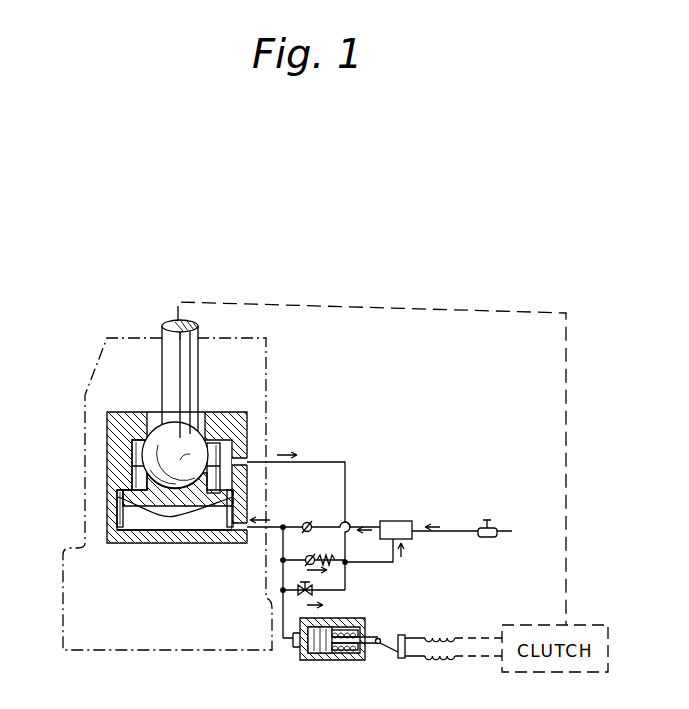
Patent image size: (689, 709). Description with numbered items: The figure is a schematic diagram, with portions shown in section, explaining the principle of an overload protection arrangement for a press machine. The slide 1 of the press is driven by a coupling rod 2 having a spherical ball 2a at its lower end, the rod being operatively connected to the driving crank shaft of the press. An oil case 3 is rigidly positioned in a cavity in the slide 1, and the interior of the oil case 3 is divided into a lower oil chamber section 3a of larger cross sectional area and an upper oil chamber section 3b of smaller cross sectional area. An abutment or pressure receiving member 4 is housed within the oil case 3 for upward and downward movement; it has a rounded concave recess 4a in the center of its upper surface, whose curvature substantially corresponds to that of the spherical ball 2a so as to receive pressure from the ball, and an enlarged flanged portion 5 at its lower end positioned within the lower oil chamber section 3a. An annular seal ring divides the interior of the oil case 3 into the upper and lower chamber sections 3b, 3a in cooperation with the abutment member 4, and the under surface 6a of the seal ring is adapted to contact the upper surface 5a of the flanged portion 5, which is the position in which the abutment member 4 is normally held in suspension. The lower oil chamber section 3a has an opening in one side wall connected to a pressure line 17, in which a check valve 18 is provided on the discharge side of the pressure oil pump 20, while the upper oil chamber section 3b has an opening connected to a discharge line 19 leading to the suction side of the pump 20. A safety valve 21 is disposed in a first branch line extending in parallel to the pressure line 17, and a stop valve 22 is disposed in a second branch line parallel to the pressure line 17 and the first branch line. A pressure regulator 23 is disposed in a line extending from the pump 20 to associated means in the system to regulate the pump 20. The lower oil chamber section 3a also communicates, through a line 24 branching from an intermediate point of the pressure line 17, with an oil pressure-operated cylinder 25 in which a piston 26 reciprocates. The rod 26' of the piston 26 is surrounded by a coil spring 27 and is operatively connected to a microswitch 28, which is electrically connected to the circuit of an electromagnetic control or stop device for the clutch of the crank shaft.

The slide 1 is at (60, 640).
The coupling rod 2 is at (176, 332).
The spherical ball 2a is at (158, 431).
The oil case 3 is at (106, 543).
The lower oil chamber section 3a is at (203, 543).
The upper oil chamber section 3b is at (131, 442).
The abutment member 4 is at (160, 512).
The concave recess 4a is at (150, 462).
The flanged portion 5 is at (114, 520).
The upper surface of flanged portion 5a is at (222, 486).
The under surface of seal ring 6a is at (118, 507).
The pressure line 17 is at (282, 530).
The check valve 18 is at (309, 523).
The discharge line 19 is at (320, 462).
The pressure oil pump 20 is at (402, 521).
The safety valve 21 is at (316, 557).
The stop valve 22 is at (314, 596).
The pressure regulator 23 is at (493, 528).
The line 24 is at (283, 642).
The oil pressure-operated cylinder 25 is at (312, 655).
The piston 26 is at (340, 666).
The piston rod 26' is at (401, 671).
The coil spring 27 is at (362, 650).
The microswitch 28 is at (407, 634).